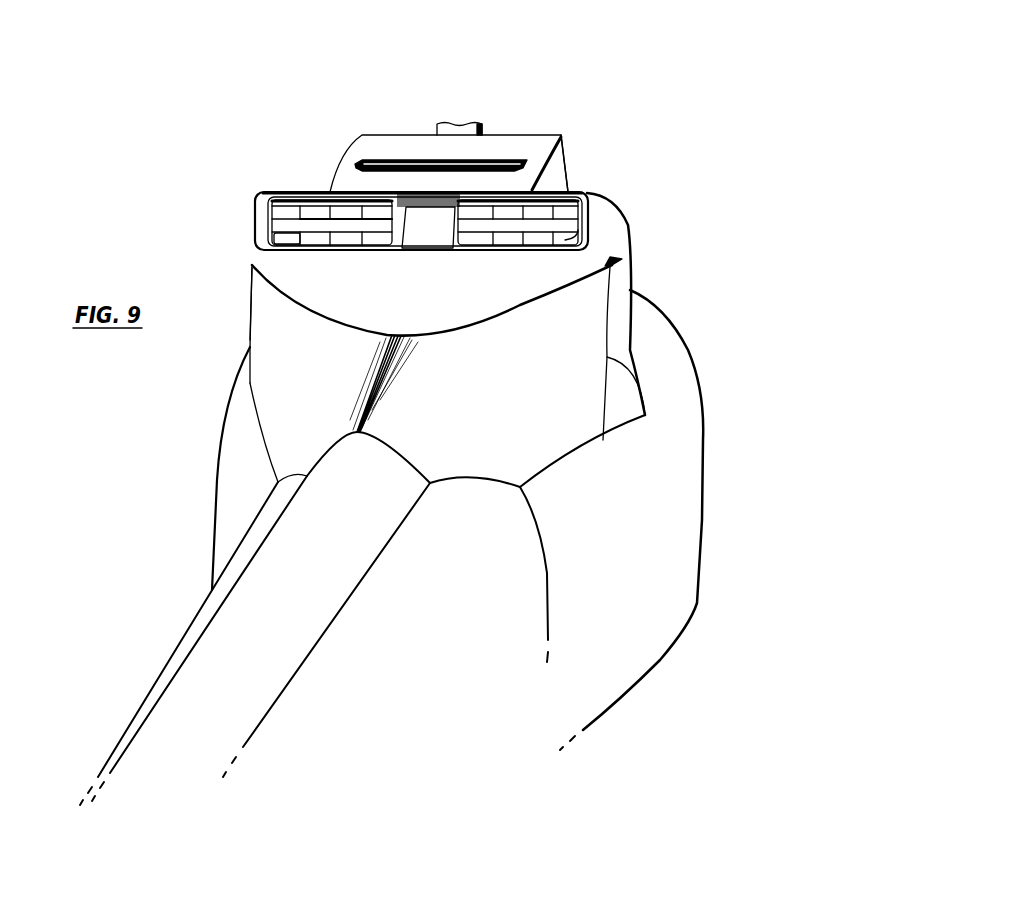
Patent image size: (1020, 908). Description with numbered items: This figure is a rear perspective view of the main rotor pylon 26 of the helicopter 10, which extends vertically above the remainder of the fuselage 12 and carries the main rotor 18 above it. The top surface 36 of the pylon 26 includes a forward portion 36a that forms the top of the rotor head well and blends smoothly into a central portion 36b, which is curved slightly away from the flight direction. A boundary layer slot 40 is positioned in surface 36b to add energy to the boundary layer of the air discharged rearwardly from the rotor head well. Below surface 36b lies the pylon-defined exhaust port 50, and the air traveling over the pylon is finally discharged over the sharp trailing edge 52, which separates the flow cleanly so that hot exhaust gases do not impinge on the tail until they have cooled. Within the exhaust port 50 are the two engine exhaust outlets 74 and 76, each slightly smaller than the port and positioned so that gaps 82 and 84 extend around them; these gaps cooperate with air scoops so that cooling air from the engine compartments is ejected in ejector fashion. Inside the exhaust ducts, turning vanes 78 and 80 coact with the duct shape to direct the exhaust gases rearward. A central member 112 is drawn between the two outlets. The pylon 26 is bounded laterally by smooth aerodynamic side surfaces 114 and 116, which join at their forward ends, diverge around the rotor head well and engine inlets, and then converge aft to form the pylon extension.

The helicopter 10 is at (746, 231).
The fuselage 12 is at (603, 570).
The main rotor 18 is at (480, 124).
The main rotor pylon 26 is at (572, 155).
The top surface 36 is at (550, 136).
The forward portion of top surface 36a is at (483, 300).
The central portion of top surface 36b is at (375, 158).
The boundary layer slot 40 is at (488, 165).
The exhaust port 50 is at (282, 247).
The sharp trailing edge 52 is at (402, 340).
The exhaust outlet 74 is at (292, 195).
The exhaust outlet 76 is at (588, 197).
The turning vane 78 is at (312, 228).
The turning vane 80 is at (572, 228).
The gap 82 is at (263, 233).
The gap 84 is at (578, 250).
The center block 112 is at (432, 233).
The aerodynamic side surface 114 is at (252, 323).
The aerodynamic side surface 116 is at (620, 300).